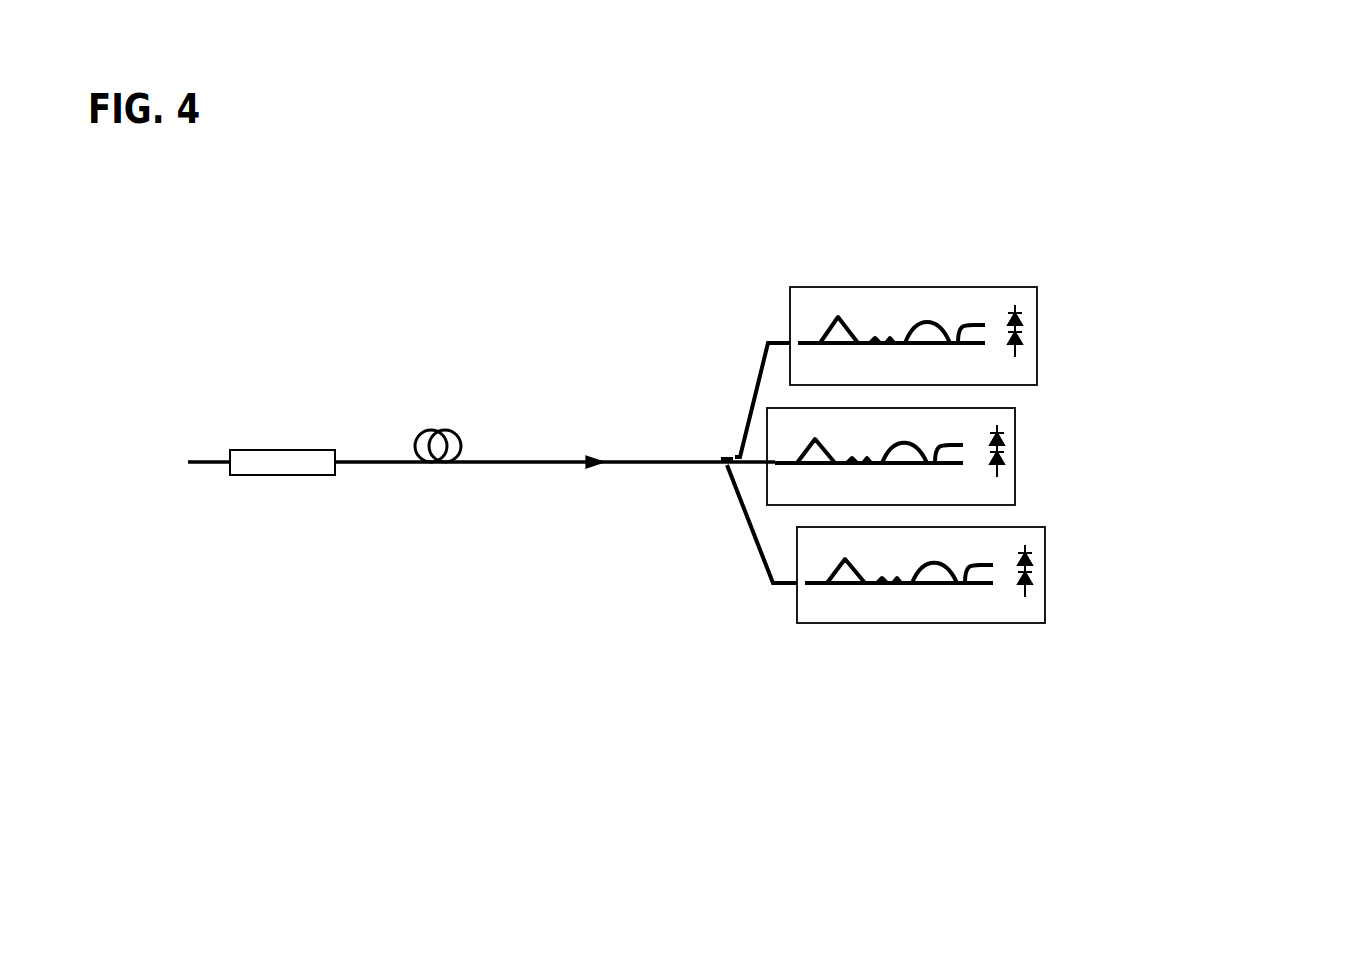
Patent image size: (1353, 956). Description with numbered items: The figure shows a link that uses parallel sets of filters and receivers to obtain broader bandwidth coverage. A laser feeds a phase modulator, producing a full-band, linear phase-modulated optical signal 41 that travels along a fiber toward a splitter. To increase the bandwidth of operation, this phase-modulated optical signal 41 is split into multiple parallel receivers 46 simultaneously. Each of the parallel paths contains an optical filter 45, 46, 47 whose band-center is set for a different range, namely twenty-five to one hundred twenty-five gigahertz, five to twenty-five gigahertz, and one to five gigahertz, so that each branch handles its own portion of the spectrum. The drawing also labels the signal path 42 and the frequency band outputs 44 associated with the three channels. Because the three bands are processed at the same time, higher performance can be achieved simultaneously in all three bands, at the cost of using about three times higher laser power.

The phase-modulated optical signal 41 is at (367, 450).
The full-band linear phase-modulated optical signal 42 is at (708, 453).
The frequency band channels 44 is at (1008, 617).
The optical filter 45 is at (777, 305).
The parallel receivers 46 is at (757, 483).
The optical filter 47 is at (793, 604).